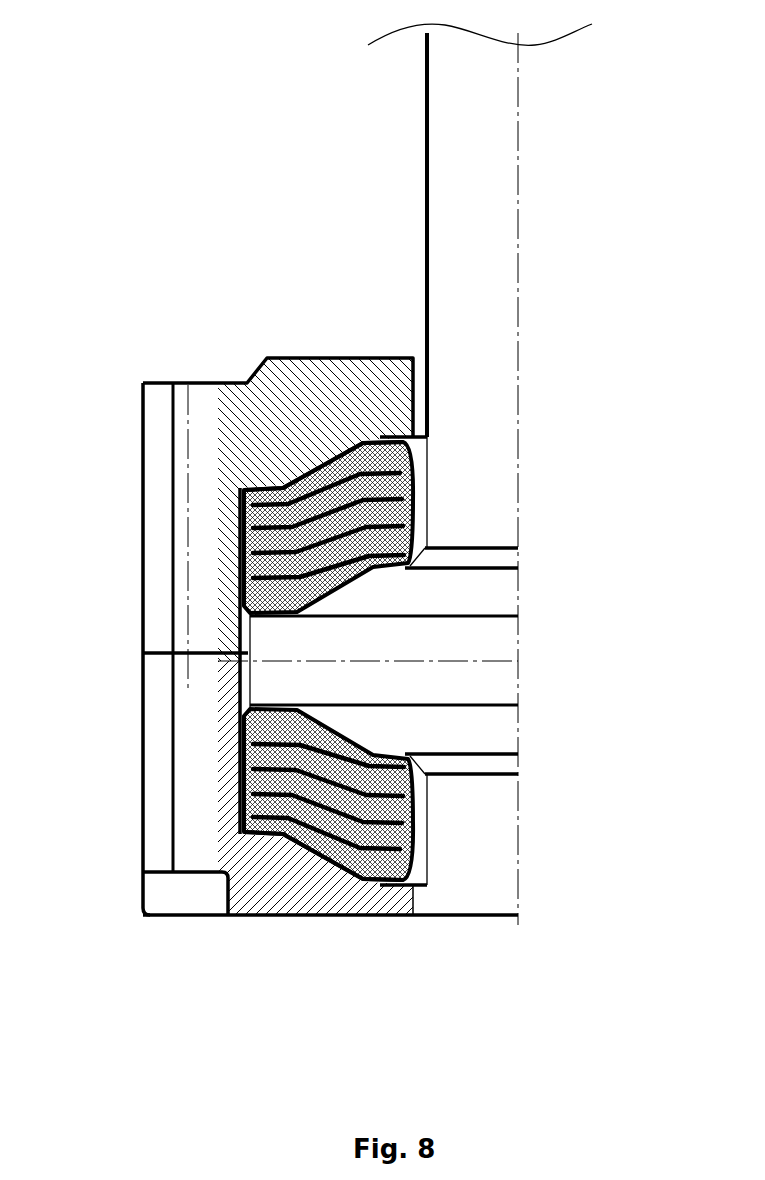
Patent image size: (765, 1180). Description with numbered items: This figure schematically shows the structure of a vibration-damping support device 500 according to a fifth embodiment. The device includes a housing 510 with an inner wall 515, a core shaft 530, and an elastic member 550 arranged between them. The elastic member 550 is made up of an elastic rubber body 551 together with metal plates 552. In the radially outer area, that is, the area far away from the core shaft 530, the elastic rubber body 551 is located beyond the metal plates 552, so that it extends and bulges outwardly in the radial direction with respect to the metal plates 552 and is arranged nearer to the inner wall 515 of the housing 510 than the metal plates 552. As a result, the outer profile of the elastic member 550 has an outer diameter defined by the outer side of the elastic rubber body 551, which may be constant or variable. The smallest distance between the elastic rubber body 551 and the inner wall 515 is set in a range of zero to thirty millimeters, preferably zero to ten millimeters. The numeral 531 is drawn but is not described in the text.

The vibration-damping support device 500 is at (239, 194).
The housing 510 is at (310, 415).
The inner wall 515 is at (215, 473).
The core shaft 530 is at (490, 425).
The bore 531 is at (490, 635).
The elastic member 550 is at (418, 492).
The elastic rubber body 551 is at (417, 523).
The metal plates 552 is at (293, 477).